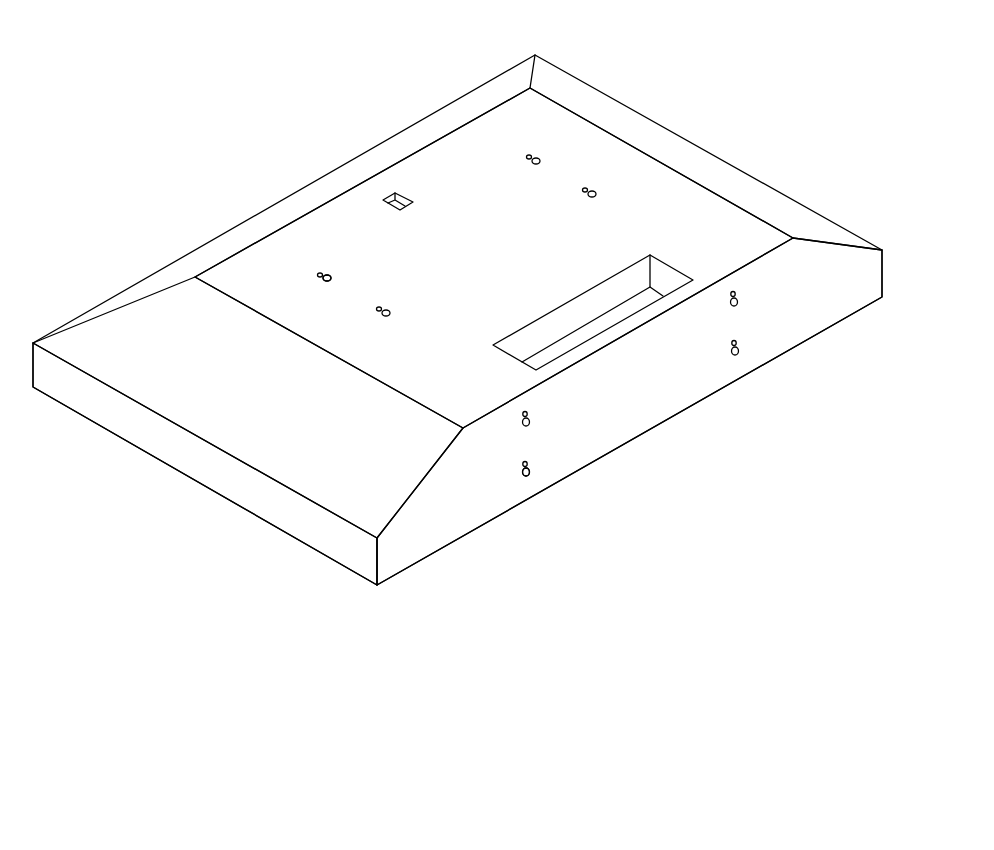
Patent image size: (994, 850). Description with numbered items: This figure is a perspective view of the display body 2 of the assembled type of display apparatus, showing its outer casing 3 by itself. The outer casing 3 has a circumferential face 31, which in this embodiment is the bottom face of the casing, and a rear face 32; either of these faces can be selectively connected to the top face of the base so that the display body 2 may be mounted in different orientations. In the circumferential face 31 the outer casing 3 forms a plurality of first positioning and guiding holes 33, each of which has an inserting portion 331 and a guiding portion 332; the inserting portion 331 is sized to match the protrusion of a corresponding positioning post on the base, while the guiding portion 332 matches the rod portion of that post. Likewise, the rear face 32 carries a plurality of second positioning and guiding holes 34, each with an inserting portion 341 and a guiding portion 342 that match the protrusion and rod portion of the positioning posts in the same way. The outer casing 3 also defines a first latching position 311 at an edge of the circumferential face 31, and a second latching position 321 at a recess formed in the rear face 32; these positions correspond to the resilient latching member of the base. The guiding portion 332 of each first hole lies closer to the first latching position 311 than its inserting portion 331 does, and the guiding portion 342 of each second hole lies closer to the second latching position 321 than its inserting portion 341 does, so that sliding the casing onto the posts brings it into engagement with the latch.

The display body 2 is at (739, 70).
The outer casing 3 is at (200, 488).
The circumferential face 31 is at (437, 540).
The first latching position 311 is at (630, 333).
The rear face 32 is at (336, 221).
The second latching position 321 is at (393, 197).
The first positioning and guiding holes 33 is at (612, 543).
The inserting portion 331 is at (526, 473).
The guiding portion 332 is at (530, 461).
The second positioning and guiding holes 34 is at (157, 183).
The inserting portion 341 is at (322, 278).
The guiding portion 342 is at (325, 278).